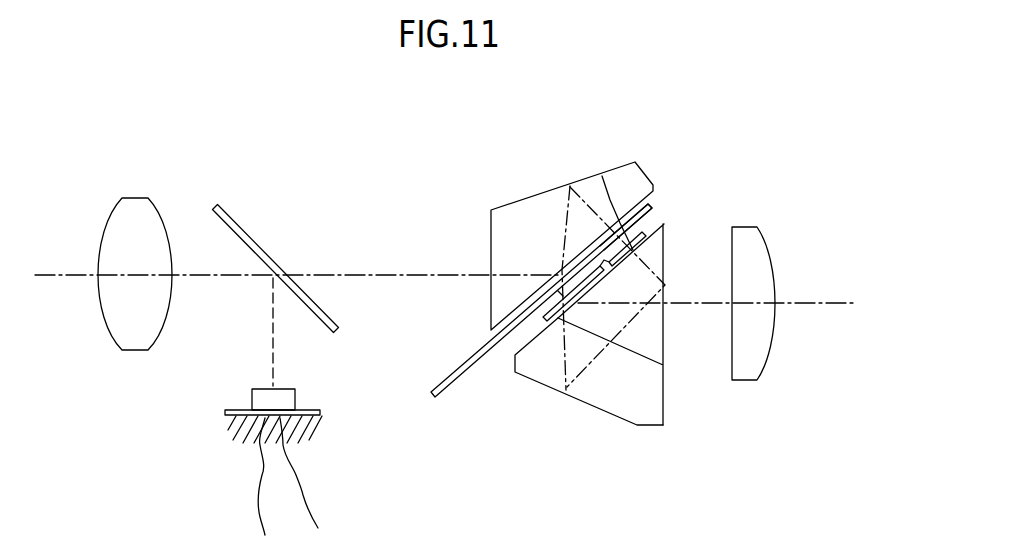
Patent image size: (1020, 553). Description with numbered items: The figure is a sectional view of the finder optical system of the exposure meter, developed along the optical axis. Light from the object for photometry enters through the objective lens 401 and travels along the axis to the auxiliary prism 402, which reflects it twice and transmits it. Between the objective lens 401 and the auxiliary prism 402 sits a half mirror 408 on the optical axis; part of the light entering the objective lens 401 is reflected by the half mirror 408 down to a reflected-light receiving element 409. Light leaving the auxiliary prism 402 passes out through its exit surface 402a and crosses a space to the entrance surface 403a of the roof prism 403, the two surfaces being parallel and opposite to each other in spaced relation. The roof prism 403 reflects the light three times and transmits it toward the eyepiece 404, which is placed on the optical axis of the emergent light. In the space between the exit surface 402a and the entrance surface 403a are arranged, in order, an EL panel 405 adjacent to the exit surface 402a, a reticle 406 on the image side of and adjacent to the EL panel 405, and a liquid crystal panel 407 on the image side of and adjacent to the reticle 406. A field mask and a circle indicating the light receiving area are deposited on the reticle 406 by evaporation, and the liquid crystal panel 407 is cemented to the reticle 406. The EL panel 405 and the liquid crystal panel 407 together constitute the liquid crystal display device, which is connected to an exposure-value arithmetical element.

The objective lens 401 is at (132, 212).
The auxiliary prism 402 is at (630, 177).
The exit surface 402a is at (645, 200).
The roof prism 403 is at (653, 247).
The entrance surface 403a is at (522, 343).
The eyepiece 404 is at (753, 262).
The EL panel 405 is at (455, 370).
The reticle 406 is at (602, 176).
The liquid crystal panel 407 is at (590, 288).
The half mirror 408 is at (251, 241).
The reflected-light receiving element 409 is at (257, 400).